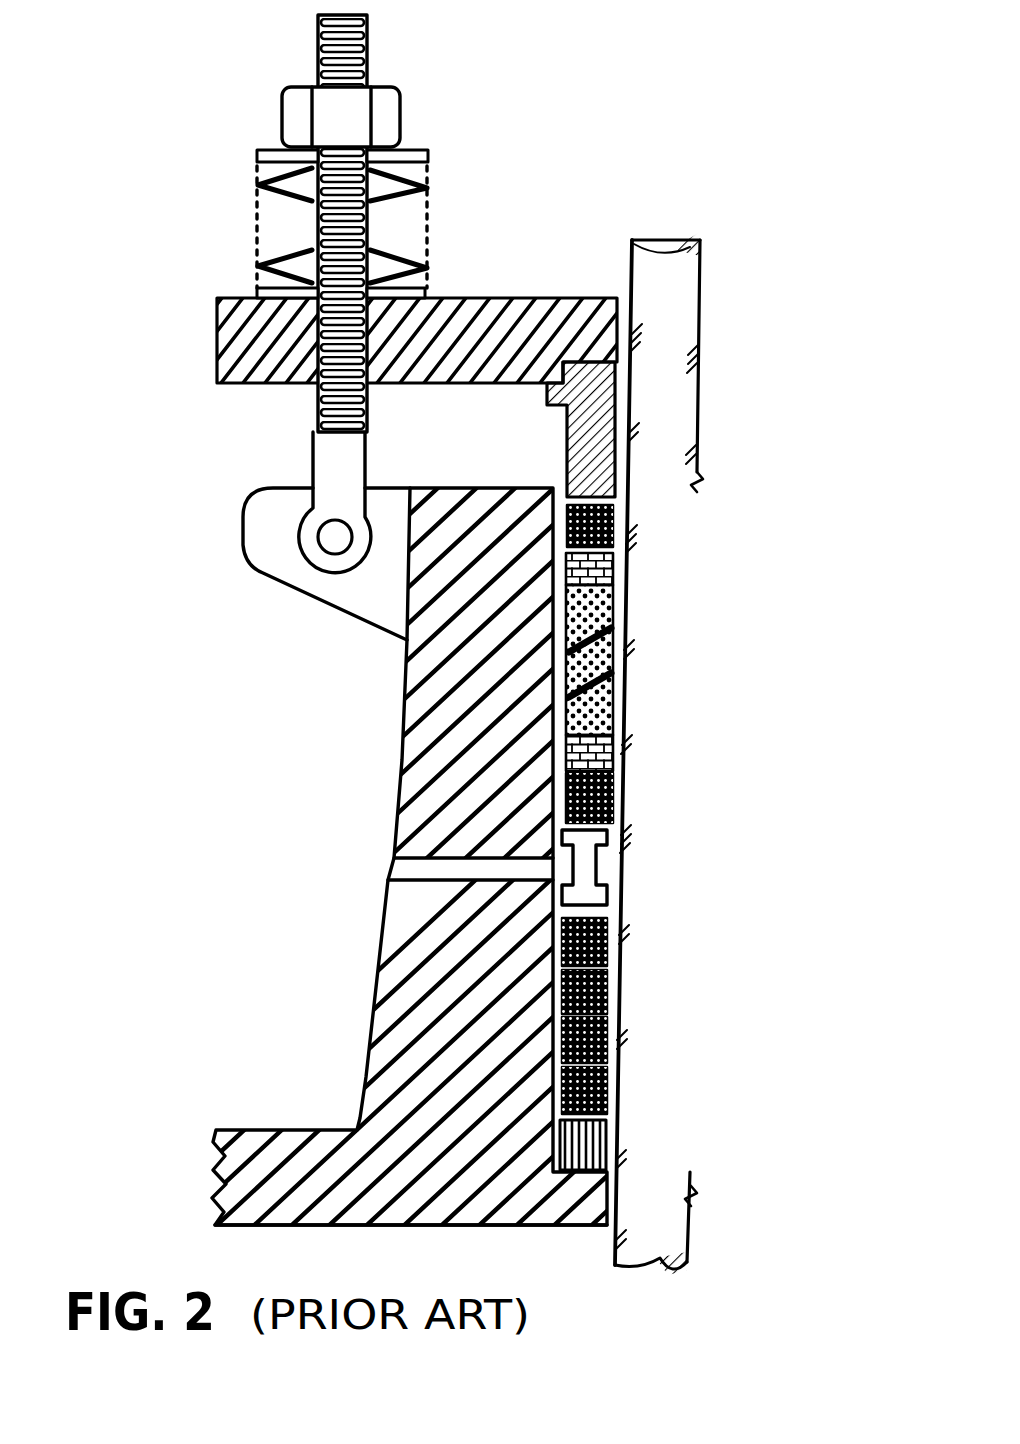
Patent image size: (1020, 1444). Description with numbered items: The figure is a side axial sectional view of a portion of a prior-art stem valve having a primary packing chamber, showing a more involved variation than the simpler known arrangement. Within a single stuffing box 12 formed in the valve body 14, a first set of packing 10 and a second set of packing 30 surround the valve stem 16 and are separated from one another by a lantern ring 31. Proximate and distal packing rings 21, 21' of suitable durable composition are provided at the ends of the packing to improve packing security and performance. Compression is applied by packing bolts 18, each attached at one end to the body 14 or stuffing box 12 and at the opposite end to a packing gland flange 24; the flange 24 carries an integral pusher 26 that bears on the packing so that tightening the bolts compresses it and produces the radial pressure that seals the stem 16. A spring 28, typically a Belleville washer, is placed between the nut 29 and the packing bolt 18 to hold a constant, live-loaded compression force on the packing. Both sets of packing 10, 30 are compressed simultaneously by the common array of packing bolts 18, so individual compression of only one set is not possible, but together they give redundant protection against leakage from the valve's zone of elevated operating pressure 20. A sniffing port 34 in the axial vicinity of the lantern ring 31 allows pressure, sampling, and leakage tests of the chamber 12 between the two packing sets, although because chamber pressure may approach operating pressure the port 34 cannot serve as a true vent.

The packing 10 is at (658, 918).
The stuffing box 12 is at (208, 773).
The valve body 14 is at (458, 733).
The valve stem 16 is at (675, 305).
The packing bolt 18 is at (370, 56).
The zone of elevated operating pressure 20 is at (579, 1273).
The proximate packing ring 21 is at (673, 1145).
The distal packing ring 21' is at (684, 529).
The packing gland flange 24 is at (237, 346).
The pusher 26 is at (567, 437).
The spring 28 is at (432, 268).
The nut 29 is at (386, 109).
The second set of packing 30 is at (657, 820).
The lantern ring 31 is at (585, 865).
The sniffing port 34 is at (437, 873).